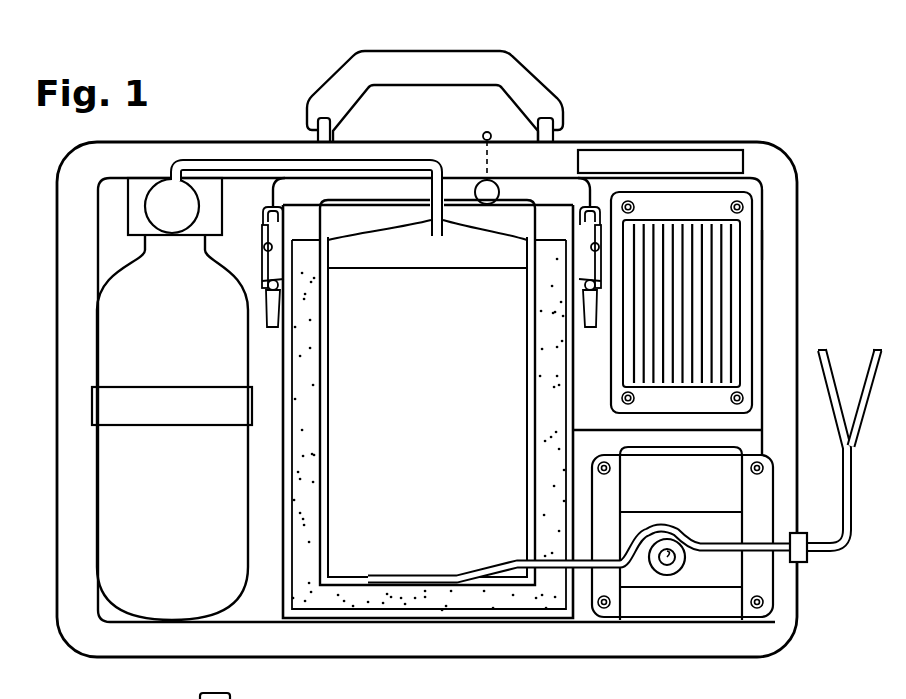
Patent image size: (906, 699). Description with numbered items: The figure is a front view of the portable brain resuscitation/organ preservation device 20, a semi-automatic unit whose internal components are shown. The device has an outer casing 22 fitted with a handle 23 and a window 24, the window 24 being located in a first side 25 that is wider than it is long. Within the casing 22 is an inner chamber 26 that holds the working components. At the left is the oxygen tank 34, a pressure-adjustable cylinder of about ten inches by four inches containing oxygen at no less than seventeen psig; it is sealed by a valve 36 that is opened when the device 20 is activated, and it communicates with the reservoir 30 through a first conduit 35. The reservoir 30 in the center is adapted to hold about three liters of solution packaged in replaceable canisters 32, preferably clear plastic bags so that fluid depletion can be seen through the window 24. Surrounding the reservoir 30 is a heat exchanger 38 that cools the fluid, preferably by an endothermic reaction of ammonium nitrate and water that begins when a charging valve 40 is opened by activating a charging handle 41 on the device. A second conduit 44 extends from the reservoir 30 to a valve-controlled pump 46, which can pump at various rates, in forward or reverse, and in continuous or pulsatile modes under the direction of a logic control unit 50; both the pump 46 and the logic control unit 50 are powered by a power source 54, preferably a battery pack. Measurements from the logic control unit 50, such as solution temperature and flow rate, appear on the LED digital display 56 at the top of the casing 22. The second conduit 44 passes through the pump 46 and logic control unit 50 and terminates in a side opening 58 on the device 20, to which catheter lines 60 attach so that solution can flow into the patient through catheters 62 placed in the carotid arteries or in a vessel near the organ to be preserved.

The brain resuscitation/organ preservation device 20 is at (744, 66).
The outer casing 22 is at (797, 185).
The handle 23 is at (519, 52).
The window 24 is at (766, 432).
The first side 25 is at (791, 334).
The inner chamber 26 is at (765, 244).
The reservoir 30 is at (337, 584).
The replaceable canisters 32 is at (403, 547).
The oxygen tank 34 is at (110, 590).
The first conduit 35 is at (247, 160).
The valve 36 is at (168, 179).
The heat exchanger 38 is at (470, 607).
The charging valve 40 is at (499, 190).
The charging handle 41 is at (490, 133).
The second conduit 44 is at (510, 578).
The pump 46 is at (665, 577).
The logic control unit 50 is at (723, 576).
The power source 54 is at (702, 617).
The LED digital display 56 is at (744, 163).
The side opening 58 is at (798, 563).
The catheter lines 60 is at (852, 521).
The catheters 62 is at (877, 347).